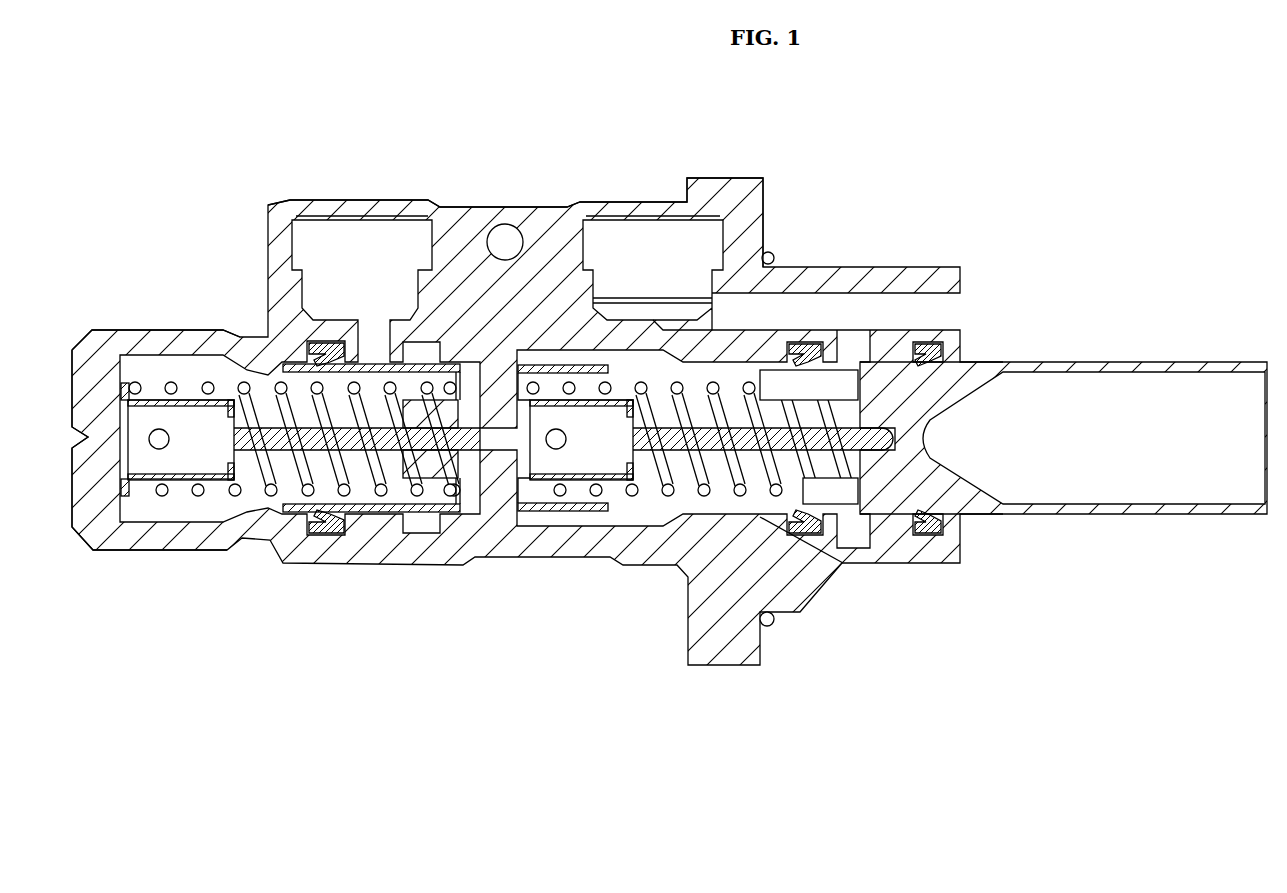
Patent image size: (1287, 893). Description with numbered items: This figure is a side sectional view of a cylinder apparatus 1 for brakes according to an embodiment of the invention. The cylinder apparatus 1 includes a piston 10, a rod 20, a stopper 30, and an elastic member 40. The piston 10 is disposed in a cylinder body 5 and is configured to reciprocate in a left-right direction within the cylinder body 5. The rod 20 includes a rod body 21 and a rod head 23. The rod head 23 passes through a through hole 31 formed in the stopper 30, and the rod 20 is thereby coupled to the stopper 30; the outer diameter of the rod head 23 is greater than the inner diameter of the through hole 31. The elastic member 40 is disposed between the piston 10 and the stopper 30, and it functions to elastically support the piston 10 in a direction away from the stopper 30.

The cylinder apparatus 1 is at (182, 173).
The cylinder body 5 is at (482, 323).
The piston 10 is at (493, 492).
The rod 20 is at (507, 470).
The rod body 21 is at (350, 508).
The rod head 23 is at (217, 458).
The stopper 30 is at (185, 480).
The through hole 31 is at (198, 353).
The elastic member 40 is at (280, 383).